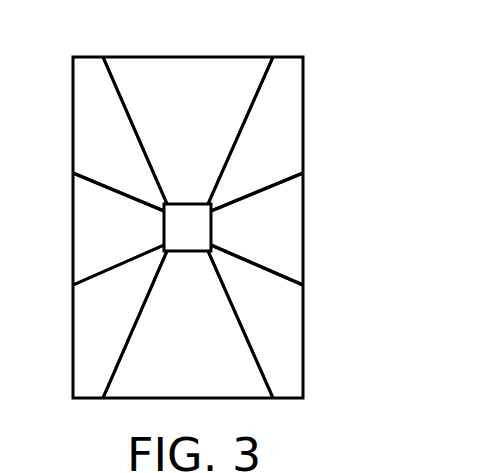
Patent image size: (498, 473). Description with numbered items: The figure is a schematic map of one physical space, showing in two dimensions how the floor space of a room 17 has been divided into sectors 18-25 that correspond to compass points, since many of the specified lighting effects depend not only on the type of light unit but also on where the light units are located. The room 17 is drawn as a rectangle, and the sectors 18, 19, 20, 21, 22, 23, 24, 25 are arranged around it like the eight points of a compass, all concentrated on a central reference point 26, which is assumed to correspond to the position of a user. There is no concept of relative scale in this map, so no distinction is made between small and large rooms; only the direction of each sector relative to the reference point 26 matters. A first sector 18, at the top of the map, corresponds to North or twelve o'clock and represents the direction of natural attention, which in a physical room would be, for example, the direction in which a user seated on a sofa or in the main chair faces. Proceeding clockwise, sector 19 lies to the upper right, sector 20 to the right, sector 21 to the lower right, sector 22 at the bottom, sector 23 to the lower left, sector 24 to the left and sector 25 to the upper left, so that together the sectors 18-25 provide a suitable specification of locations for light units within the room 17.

The room 17 is at (352, 82).
The first sector 18 is at (200, 119).
The sector 19 is at (278, 156).
The sector 20 is at (278, 241).
The sector 21 is at (278, 326).
The sector 22 is at (200, 348).
The sector 23 is at (122, 326).
The sector 24 is at (122, 241).
The sector 25 is at (122, 156).
The reference point 26 is at (200, 240).